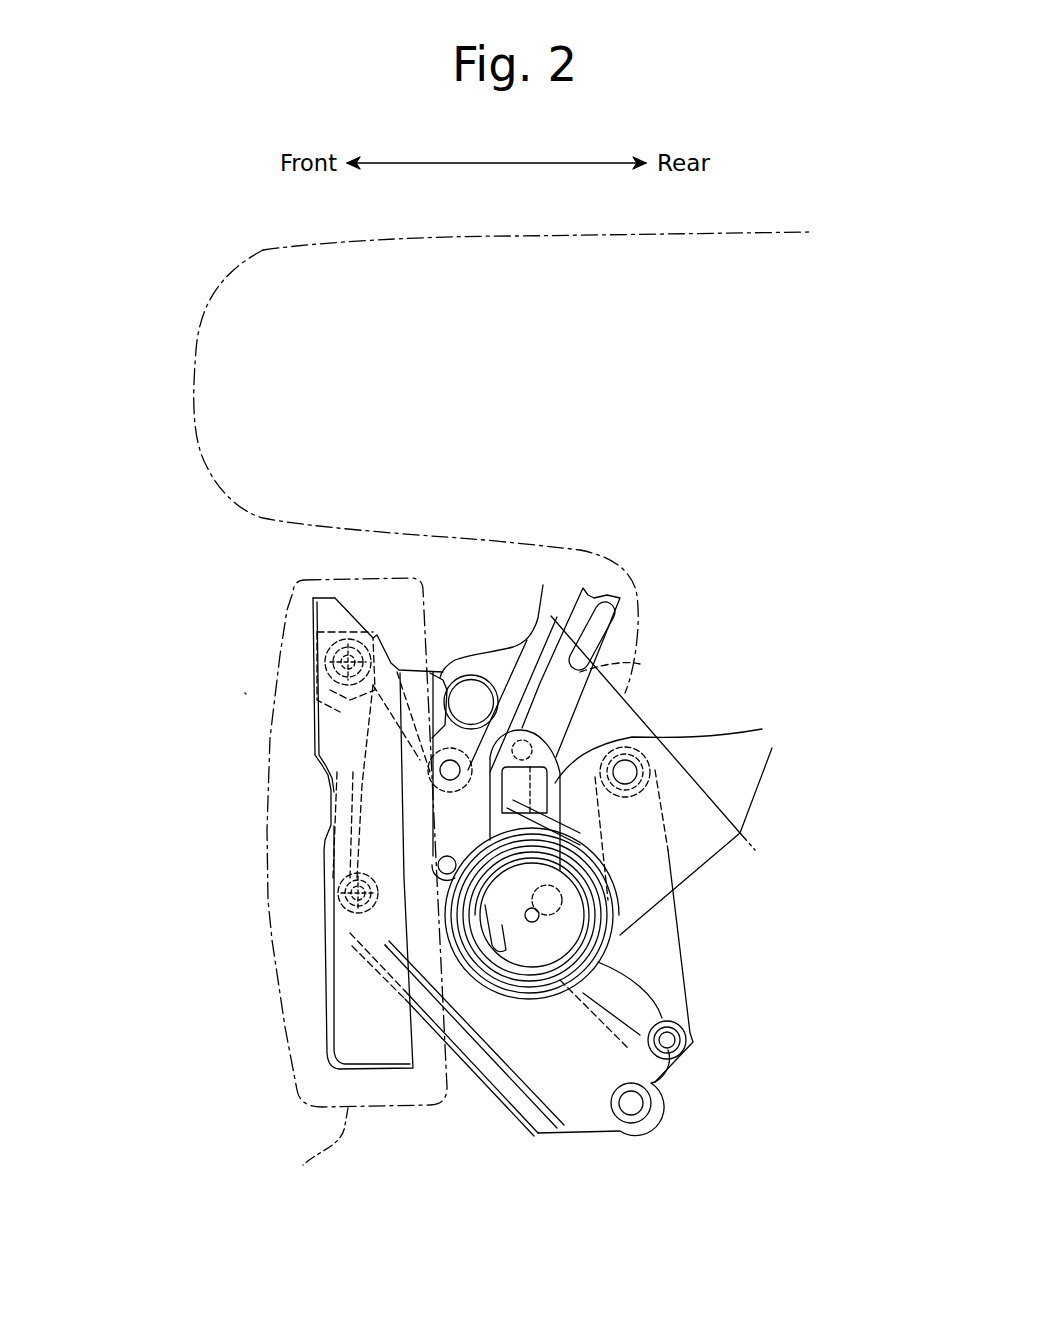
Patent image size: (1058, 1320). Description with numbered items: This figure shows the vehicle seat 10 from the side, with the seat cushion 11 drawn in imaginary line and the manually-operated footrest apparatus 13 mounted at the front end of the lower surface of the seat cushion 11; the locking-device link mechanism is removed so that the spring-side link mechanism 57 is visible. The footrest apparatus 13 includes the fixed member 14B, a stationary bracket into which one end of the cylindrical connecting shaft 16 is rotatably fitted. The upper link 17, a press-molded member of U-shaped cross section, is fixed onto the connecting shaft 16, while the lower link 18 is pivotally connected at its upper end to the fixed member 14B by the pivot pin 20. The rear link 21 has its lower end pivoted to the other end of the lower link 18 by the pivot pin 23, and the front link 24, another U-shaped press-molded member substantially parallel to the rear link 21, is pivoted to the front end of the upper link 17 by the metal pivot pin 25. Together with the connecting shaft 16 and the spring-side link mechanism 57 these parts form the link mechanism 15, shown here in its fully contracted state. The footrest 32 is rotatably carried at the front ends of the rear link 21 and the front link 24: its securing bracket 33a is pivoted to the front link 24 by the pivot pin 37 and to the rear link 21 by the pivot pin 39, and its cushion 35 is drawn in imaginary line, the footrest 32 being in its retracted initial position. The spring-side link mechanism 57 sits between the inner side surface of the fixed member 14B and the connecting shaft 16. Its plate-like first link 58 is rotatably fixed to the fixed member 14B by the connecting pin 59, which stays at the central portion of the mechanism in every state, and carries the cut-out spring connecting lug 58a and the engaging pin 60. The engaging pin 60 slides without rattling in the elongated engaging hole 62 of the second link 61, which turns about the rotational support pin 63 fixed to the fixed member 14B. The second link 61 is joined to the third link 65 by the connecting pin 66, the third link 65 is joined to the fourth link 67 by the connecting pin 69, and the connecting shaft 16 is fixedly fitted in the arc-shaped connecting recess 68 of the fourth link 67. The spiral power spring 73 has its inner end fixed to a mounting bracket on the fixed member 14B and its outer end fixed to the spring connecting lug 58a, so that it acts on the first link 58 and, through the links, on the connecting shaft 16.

The vehicle seat 10 is at (229, 555).
The seat cushion 11 is at (270, 272).
The footrest apparatus 13 is at (238, 693).
The fixed member 14B is at (690, 862).
The link mechanism 15 is at (454, 1098).
The connecting shaft 16 is at (543, 590).
The upper link 17 is at (572, 1100).
The lower link 18 is at (690, 930).
The pivot pin 20 is at (627, 776).
The rear link 21 is at (657, 1085).
The pivot pin 23 is at (668, 1042).
The front link 24 is at (497, 1086).
The pivot pin 25 is at (631, 1105).
The footrest 32 is at (252, 907).
The securing bracket 33a is at (325, 660).
The cushion 35 is at (315, 1150).
The pivot pin 37 is at (345, 925).
The pivot pin 39 is at (322, 645).
The spring-side link mechanism 57 is at (592, 727).
The first link 58 is at (555, 820).
The spring connecting lug 58a is at (783, 776).
The connecting pin 59 is at (536, 918).
The engaging pin 60 is at (640, 664).
The second link 61 is at (617, 600).
The engaging hole 62 is at (608, 614).
The rotational support pin 63 is at (457, 778).
The third link 65 is at (447, 817).
The connecting pin 66 is at (440, 858).
The fourth link 67 is at (443, 664).
The connecting recess 68 is at (448, 713).
The connecting pin 69 is at (437, 772).
The power spring 73 is at (620, 1003).